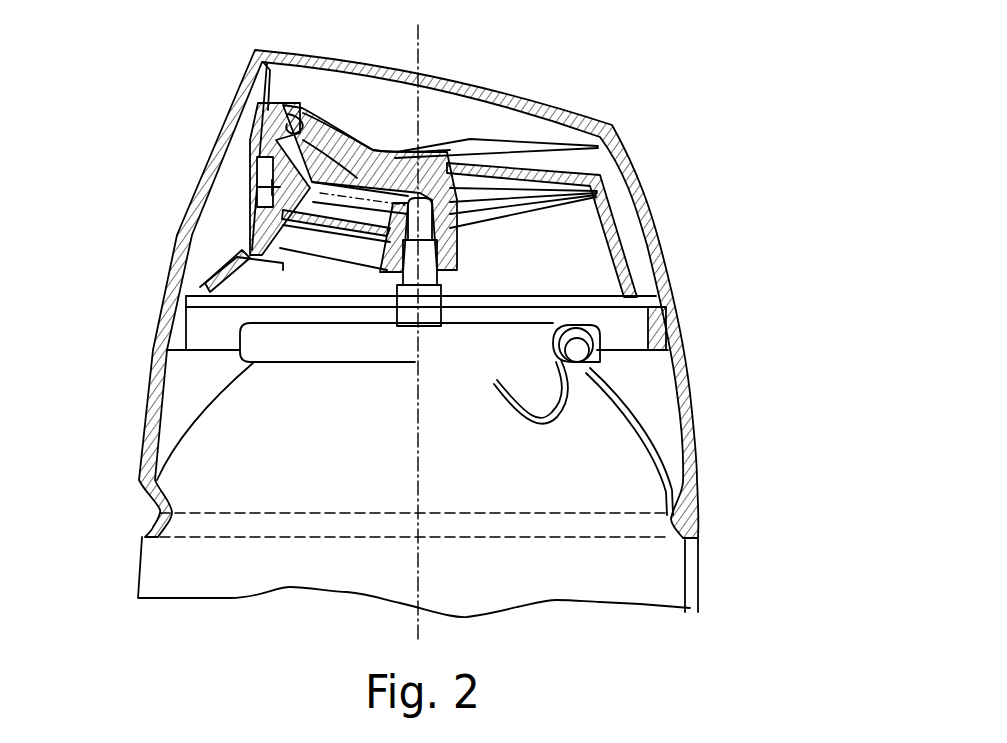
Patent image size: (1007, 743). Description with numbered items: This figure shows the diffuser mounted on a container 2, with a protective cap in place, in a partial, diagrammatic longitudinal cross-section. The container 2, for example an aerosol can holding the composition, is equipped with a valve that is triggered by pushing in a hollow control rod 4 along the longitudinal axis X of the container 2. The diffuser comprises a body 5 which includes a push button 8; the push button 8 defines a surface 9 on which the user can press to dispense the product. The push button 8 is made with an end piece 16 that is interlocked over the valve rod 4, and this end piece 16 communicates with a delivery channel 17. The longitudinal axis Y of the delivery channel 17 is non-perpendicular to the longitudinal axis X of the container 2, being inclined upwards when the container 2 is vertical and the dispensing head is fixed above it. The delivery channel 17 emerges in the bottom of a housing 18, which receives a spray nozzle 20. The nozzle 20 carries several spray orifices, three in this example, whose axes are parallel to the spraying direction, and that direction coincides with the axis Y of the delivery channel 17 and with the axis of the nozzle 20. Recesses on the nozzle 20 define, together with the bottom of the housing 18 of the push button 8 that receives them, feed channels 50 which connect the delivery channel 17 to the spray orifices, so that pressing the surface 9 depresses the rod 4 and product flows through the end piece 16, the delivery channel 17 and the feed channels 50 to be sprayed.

The container 2 is at (172, 572).
The hollow control rod 4 is at (425, 308).
The body 5 is at (150, 373).
The push button 8 is at (627, 235).
The surface 9 is at (430, 150).
The end piece 16 is at (460, 230).
The delivery channel 17 is at (374, 152).
The housing 18 is at (263, 120).
The spray nozzle 20 is at (243, 235).
The feed channels 50 is at (291, 158).
The longitudinal axis of the container X is at (418, 572).
The longitudinal axis of the delivery channel Y is at (242, 180).